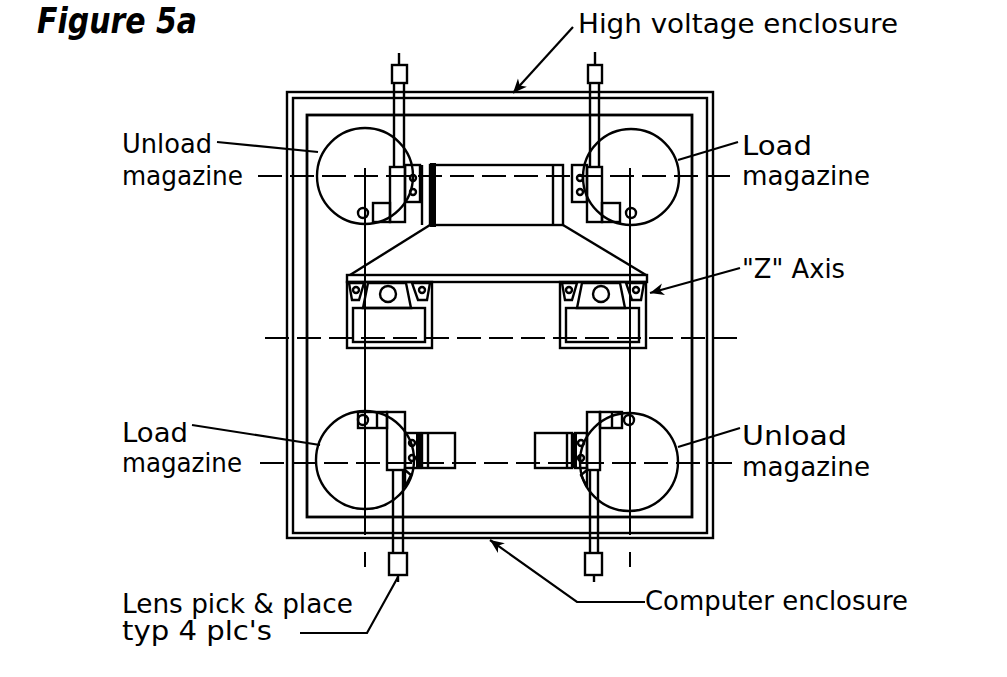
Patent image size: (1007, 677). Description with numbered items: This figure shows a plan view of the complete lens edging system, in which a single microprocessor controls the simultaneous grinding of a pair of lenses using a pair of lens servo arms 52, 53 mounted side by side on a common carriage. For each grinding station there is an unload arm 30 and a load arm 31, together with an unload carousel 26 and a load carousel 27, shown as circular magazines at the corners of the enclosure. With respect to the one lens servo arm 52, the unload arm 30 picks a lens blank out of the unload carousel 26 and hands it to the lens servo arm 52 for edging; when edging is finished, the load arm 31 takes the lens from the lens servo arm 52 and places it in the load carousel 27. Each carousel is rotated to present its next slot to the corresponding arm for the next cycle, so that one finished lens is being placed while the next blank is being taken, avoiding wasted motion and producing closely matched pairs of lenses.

The unload carousel 26 is at (355, 457).
The load carousel 27 is at (366, 165).
The unload arm 30 is at (395, 443).
The load arm 31 is at (410, 205).
The lens servo arm 52 is at (350, 323).
The lens servo arm 53 is at (643, 327).